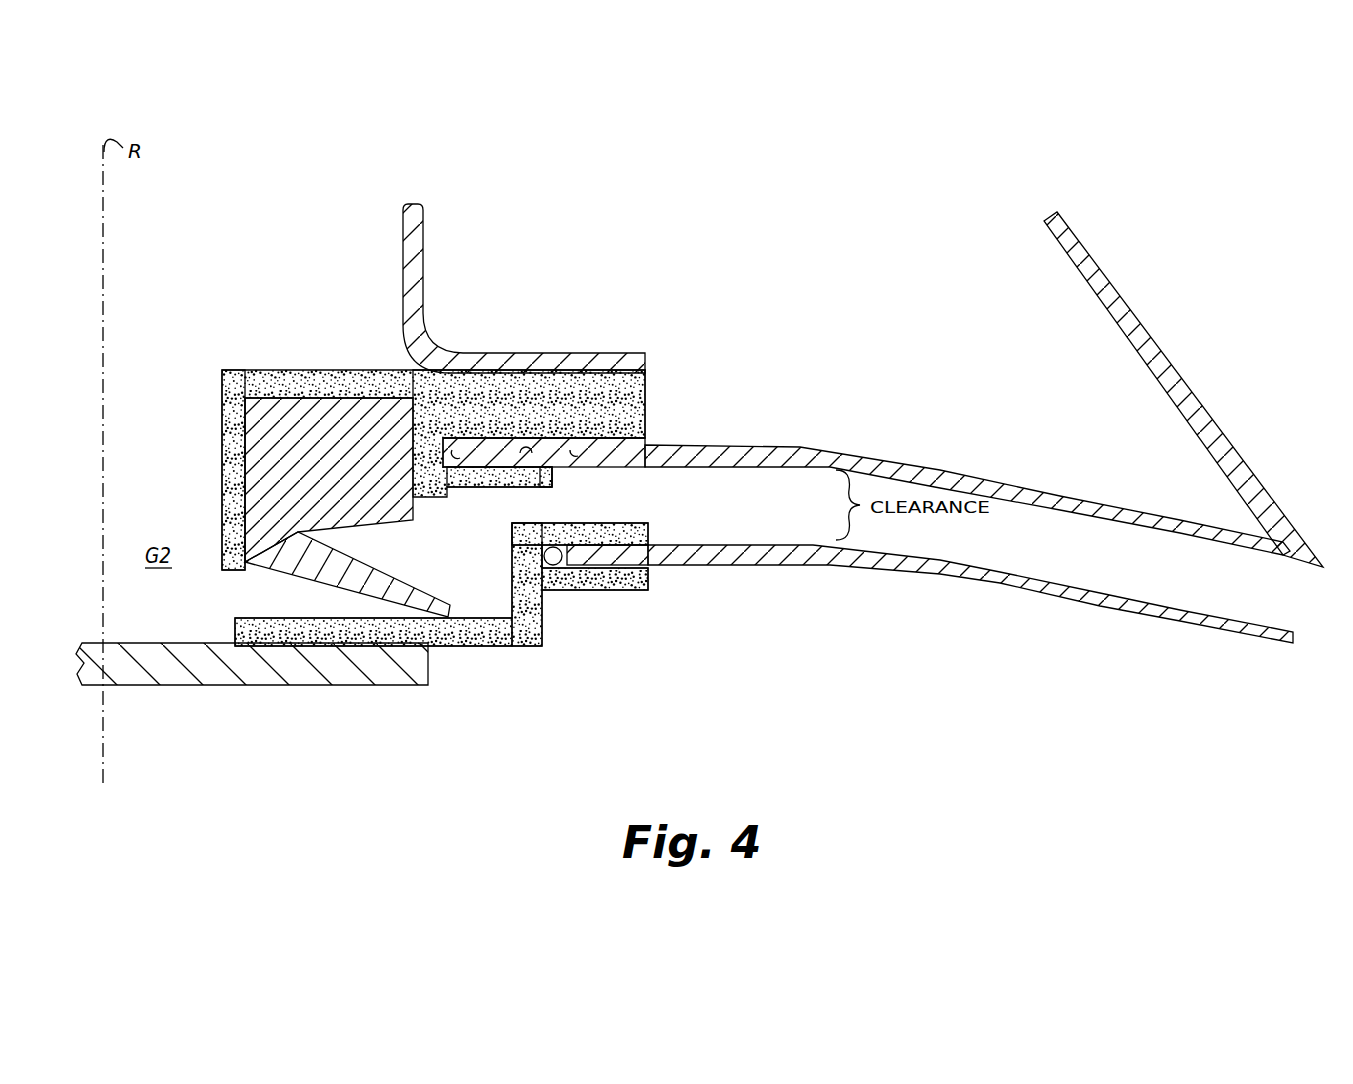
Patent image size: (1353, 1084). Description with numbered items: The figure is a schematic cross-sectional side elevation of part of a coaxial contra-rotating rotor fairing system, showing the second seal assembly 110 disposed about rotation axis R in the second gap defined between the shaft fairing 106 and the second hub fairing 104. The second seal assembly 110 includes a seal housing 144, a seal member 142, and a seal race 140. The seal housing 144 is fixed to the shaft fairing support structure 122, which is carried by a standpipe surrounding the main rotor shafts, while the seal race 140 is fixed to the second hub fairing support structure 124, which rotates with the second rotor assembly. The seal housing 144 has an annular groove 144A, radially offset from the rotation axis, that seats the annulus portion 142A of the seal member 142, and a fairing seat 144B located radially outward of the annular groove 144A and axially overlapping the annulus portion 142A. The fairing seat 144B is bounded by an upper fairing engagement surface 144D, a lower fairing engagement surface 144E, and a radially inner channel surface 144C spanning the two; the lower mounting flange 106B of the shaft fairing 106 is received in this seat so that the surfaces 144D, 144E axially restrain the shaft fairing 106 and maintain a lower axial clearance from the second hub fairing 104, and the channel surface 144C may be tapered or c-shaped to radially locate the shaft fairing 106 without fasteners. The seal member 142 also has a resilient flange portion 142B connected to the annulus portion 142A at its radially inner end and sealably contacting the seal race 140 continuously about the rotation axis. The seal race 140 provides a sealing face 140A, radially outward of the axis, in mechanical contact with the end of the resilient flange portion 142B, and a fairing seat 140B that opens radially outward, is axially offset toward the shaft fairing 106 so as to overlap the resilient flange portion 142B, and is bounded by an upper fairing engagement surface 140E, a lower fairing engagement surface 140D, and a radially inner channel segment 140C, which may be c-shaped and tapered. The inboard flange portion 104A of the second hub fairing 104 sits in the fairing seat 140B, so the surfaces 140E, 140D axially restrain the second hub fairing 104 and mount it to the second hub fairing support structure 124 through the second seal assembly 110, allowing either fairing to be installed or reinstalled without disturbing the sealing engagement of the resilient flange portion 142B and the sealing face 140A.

The second seal assembly 110 is at (205, 335).
The seal housing 144 is at (322, 383).
The annular groove 144A is at (258, 488).
The fairing seat 144B is at (455, 470).
The radially inner channel surface 144C is at (450, 492).
The upper fairing engagement surface 144D is at (560, 457).
The lower fairing engagement surface 144E is at (547, 487).
The seal member 142 is at (267, 420).
The annulus portion 142A is at (352, 475).
The resilient flange portion 142B is at (317, 571).
The seal race 140 is at (478, 640).
The sealing face 140A is at (282, 618).
The fairing seat 140B is at (553, 590).
The radially inner channel segment 140C is at (517, 546).
The lower fairing engagement surface 140D is at (618, 590).
The upper fairing engagement surface 140E is at (560, 522).
The shaft fairing support structure 122 is at (420, 223).
The second hub fairing support structure 124 is at (210, 675).
The second hub fairing 104 is at (1038, 590).
The inboard flange portion 104A is at (667, 565).
The shaft fairing 106 is at (1160, 350).
The lower mounting flange 106B is at (775, 470).